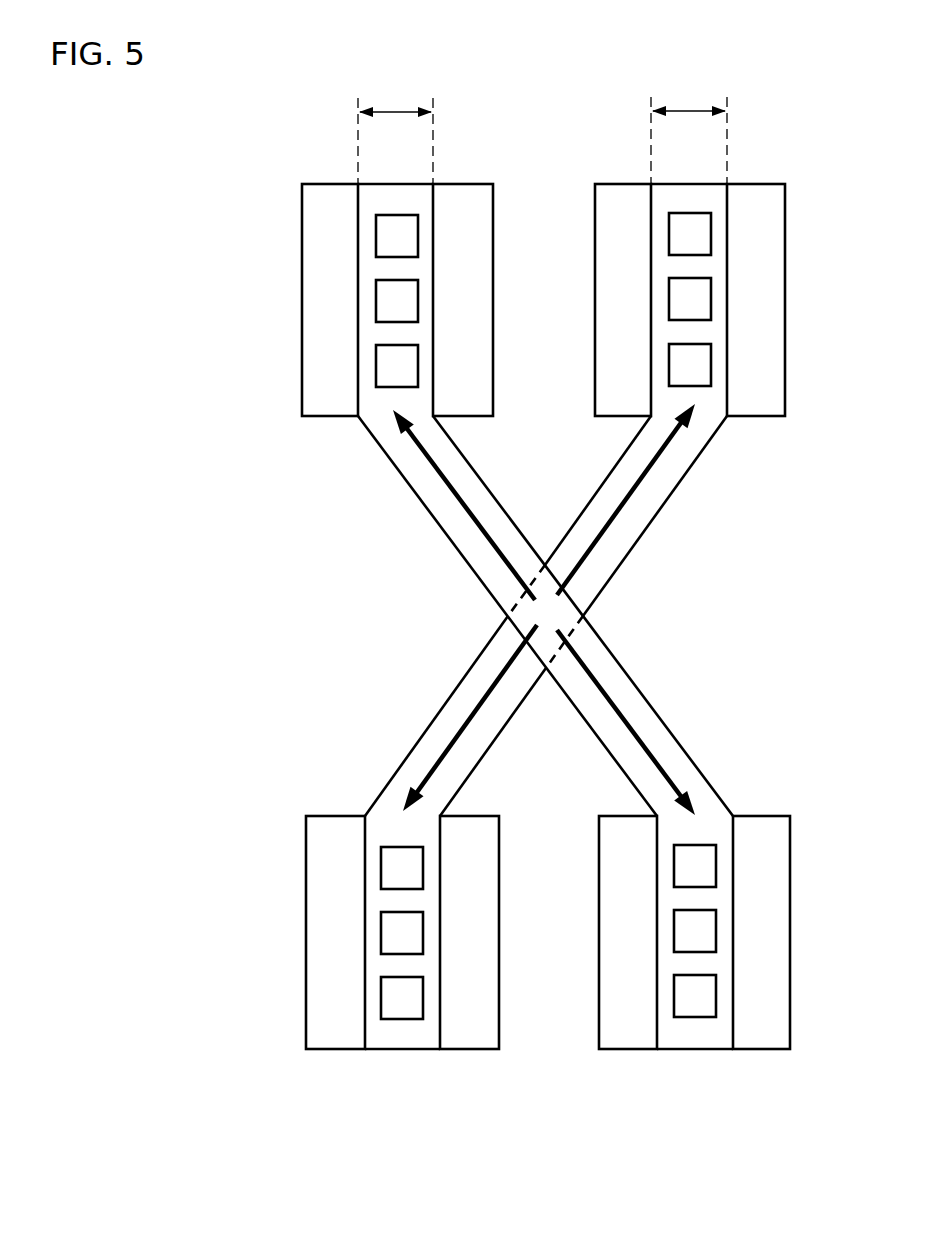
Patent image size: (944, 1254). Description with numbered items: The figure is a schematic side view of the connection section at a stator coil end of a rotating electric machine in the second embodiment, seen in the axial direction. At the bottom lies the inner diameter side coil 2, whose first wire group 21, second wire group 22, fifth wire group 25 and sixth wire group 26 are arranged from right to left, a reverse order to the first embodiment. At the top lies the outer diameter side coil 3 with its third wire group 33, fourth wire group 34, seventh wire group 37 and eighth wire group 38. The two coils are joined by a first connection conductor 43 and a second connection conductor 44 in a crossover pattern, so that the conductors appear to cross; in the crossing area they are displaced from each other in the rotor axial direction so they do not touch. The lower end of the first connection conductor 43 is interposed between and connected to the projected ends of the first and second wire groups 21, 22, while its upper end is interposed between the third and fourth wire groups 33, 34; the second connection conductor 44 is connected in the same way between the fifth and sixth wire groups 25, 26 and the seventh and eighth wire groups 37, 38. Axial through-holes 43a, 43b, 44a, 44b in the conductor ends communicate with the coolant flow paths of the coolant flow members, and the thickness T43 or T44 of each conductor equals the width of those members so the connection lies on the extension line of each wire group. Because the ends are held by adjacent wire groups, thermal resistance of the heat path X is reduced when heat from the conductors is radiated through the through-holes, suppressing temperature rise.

The inner diameter side coil 2 is at (490, 969).
The outer diameter side coil 3 is at (513, 263).
The first wire group 21 is at (777, 1037).
The second wire group 22 is at (628, 1037).
The fifth wire group 25 is at (472, 1038).
The sixth wire group 26 is at (323, 1038).
The third wire group 33 is at (328, 368).
The fourth wire group 34 is at (462, 198).
The seventh wire group 37 is at (618, 197).
The eighth wire group 38 is at (758, 250).
The first connection conductor 43 is at (623, 667).
The second connection conductor 44 is at (643, 518).
The axial through-holes 43a is at (703, 930).
The axial through-holes 43b is at (380, 295).
The axial through-holes 44a is at (393, 930).
The axial through-holes 44b is at (695, 302).
The thickness of the first connection conductor T43 is at (398, 118).
The thickness of the second connection conductor T44 is at (688, 117).
The heat path X is at (485, 542).